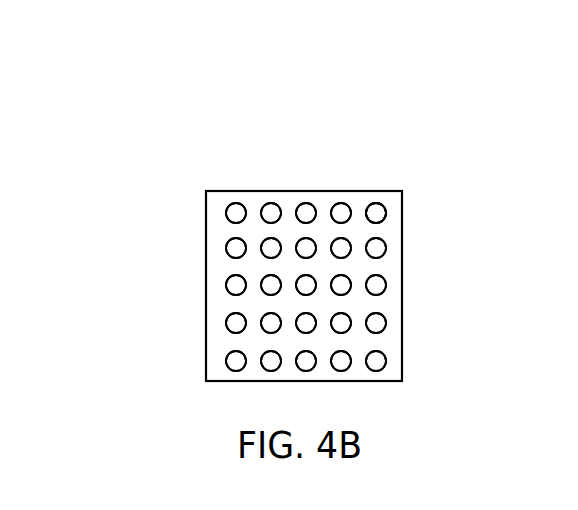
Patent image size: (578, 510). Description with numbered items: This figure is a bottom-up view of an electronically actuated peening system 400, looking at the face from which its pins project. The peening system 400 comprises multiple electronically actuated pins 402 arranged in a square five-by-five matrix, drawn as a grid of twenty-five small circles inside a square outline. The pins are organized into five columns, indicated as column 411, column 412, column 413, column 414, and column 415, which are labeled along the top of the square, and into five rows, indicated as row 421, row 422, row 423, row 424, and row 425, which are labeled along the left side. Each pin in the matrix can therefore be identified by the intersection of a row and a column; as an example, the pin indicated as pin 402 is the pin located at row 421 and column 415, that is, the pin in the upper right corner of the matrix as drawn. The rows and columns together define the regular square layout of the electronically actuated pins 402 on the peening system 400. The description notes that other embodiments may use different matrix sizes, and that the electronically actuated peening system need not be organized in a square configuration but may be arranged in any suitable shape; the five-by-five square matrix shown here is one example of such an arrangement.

The peening system 400 is at (128, 157).
The electronically actuated pin 402 is at (378, 214).
The column 411 is at (235, 179).
The column 412 is at (267, 180).
The column 413 is at (305, 187).
The column 414 is at (343, 188).
The column 415 is at (383, 186).
The row 421 is at (213, 214).
The row 422 is at (213, 250).
The row 423 is at (213, 288).
The row 424 is at (213, 325).
The row 425 is at (213, 364).